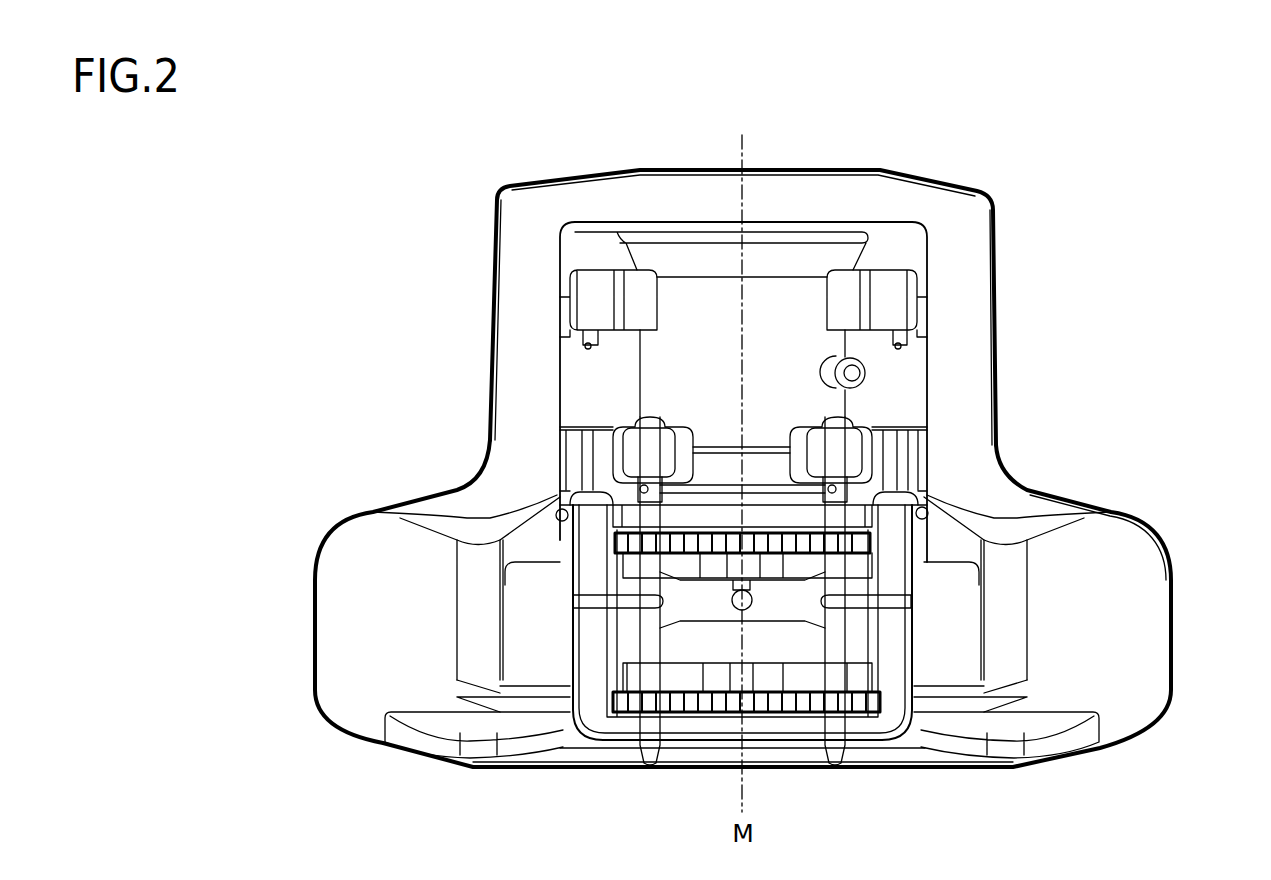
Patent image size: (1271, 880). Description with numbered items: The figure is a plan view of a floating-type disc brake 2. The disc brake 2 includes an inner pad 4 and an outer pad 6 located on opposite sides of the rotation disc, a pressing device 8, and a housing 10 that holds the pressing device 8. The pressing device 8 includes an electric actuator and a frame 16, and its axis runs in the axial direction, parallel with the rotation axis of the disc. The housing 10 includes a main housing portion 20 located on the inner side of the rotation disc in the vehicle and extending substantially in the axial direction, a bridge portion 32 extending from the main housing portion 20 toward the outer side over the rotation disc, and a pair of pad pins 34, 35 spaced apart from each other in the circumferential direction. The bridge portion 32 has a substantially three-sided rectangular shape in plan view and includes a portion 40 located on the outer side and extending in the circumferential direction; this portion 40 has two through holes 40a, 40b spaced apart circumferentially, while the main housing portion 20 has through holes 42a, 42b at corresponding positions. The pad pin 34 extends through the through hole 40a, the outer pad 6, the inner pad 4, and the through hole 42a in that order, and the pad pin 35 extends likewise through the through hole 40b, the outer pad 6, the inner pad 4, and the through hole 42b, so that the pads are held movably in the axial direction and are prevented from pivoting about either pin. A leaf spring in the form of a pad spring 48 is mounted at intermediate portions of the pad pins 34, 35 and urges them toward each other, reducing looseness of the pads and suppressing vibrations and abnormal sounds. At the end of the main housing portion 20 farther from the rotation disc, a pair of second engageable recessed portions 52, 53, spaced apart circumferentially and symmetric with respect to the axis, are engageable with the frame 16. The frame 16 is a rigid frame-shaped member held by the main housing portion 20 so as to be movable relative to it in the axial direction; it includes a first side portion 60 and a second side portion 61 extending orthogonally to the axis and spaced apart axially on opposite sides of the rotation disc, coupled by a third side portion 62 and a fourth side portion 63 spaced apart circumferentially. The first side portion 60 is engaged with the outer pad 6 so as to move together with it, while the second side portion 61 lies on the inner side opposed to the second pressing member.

The disc brake 2 is at (1010, 188).
The inner pad 4 is at (838, 572).
The outer pad 6 is at (698, 702).
The pressing device 8 is at (468, 252).
The housing 10 is at (883, 240).
The frame 16 is at (1008, 360).
The main housing portion 20 is at (792, 323).
The bridge portion 32 is at (930, 665).
The pad pin 34 is at (878, 737).
The pad pin 35 is at (655, 650).
The portion 40 is at (762, 732).
The through hole 40a is at (833, 768).
The through hole 40b is at (648, 768).
The through hole 42a is at (848, 467).
The through hole 42b is at (640, 467).
The pad spring 48 is at (675, 598).
The second engageable recessed portion 52 is at (843, 310).
The second engageable recessed portion 53 is at (633, 282).
The first side portion 60 is at (938, 755).
The second side portion 61 is at (763, 177).
The third side portion 62 is at (1113, 530).
The fourth side portion 63 is at (502, 350).